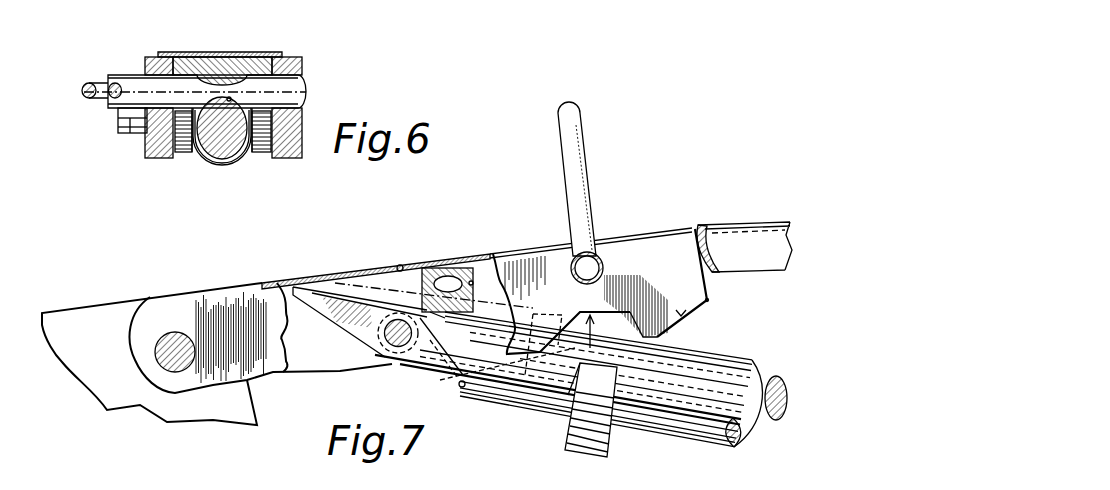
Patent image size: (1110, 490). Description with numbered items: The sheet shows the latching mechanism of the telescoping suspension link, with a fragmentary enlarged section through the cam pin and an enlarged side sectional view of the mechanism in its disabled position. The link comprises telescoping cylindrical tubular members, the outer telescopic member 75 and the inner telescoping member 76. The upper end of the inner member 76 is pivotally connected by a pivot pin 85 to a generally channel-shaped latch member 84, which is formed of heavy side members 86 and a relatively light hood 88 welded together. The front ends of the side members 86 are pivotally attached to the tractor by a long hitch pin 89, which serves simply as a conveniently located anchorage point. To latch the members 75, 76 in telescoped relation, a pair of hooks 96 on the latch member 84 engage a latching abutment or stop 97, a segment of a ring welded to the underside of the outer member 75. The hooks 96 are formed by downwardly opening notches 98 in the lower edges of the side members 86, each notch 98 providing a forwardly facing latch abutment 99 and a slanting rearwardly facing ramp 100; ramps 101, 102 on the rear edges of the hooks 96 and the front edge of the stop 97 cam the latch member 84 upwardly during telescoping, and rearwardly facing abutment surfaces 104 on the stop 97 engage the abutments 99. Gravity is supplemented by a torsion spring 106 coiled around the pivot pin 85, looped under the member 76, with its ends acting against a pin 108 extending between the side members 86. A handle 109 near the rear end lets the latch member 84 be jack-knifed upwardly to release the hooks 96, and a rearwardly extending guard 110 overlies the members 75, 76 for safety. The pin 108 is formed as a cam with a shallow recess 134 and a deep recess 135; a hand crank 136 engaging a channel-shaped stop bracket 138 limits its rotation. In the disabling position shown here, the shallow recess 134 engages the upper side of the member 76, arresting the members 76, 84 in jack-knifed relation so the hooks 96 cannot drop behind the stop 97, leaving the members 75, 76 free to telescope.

In FIG. 7, the outer telescopic member 75 is at (741, 368).
In FIG. 6, the inner telescoping member 76 is at (229, 145).
In FIG. 7, the inner telescoping member 76 is at (768, 408).
In FIG. 7, the latch member 84 is at (547, 240).
In FIG. 7, the pivot pin 85 is at (396, 348).
In FIG. 6, the side members 86 is at (157, 158).
In FIG. 7, the side members 86 is at (498, 262).
In FIG. 6, the hood 88 is at (183, 52).
In FIG. 7, the hood 88 is at (311, 279).
In FIG. 7, the hitch pin 89 is at (162, 358).
In FIG. 7, the hooks 96 is at (682, 316).
In FIG. 7, the latching abutment or stop 97 is at (606, 445).
In FIG. 7, the notches 98 is at (601, 339).
In FIG. 7, the latch abutment 99 is at (628, 317).
In FIG. 7, the ramp 100 is at (567, 324).
In FIG. 7, the ramp 101 is at (709, 302).
In FIG. 7, the ramp 102 is at (582, 364).
In FIG. 7, the abutment surfaces 104 is at (620, 372).
In FIG. 6, the torsion spring 106 is at (185, 152).
In FIG. 7, the torsion spring 106 is at (375, 344).
In FIG. 6, the cam pin 108 is at (292, 88).
In FIG. 7, the cam pin 108 is at (449, 274).
In FIG. 7, the handle 109 is at (578, 173).
In FIG. 7, the guard 110 is at (753, 231).
In FIG. 6, the shallow recess 134 is at (222, 56).
In FIG. 7, the shallow recess 134 is at (445, 318).
In FIG. 6, the deep recess 135 is at (231, 98).
In FIG. 7, the deep recess 135 is at (472, 285).
In FIG. 6, the hand crank 136 is at (88, 98).
In FIG. 7, the hand crank 136 is at (400, 264).
In FIG. 6, the stop bracket 138 is at (126, 133).